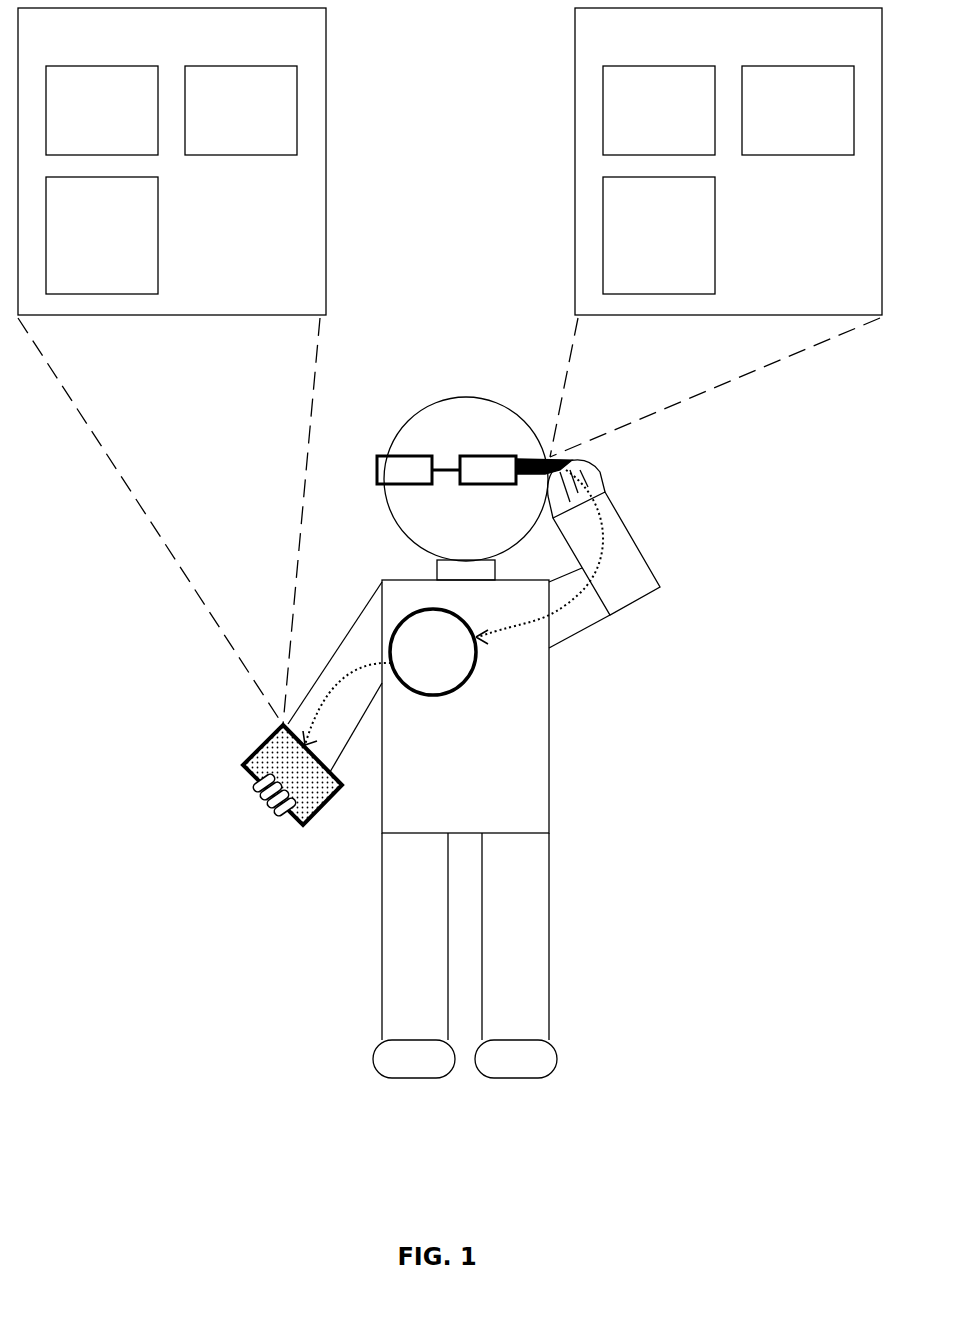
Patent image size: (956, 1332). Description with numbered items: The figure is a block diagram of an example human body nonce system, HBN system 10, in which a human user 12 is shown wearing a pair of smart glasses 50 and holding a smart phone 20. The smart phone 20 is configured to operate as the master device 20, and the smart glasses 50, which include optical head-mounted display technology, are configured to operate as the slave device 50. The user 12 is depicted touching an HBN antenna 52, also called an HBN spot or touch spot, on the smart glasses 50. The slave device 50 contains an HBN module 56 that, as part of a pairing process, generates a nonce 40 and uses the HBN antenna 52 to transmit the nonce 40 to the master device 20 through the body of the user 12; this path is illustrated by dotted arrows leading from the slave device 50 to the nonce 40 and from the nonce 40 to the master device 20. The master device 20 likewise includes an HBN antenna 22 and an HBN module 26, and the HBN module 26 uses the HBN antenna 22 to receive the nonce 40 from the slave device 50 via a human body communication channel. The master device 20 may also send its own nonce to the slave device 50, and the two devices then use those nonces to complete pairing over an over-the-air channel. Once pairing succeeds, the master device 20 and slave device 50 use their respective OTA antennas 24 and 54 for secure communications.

The HBN system 10 is at (676, 872).
The human user 12 is at (381, 818).
The smart phone 20 is at (265, 40).
The HBN antenna 22 is at (89, 150).
The OTA antenna 24 is at (228, 150).
The HBN module 26 is at (89, 261).
The nonce 40 is at (420, 676).
The smart glasses 50 is at (815, 40).
The HBN antenna 52 is at (646, 150).
The OTA antenna 54 is at (785, 150).
The HBN module 56 is at (646, 261).